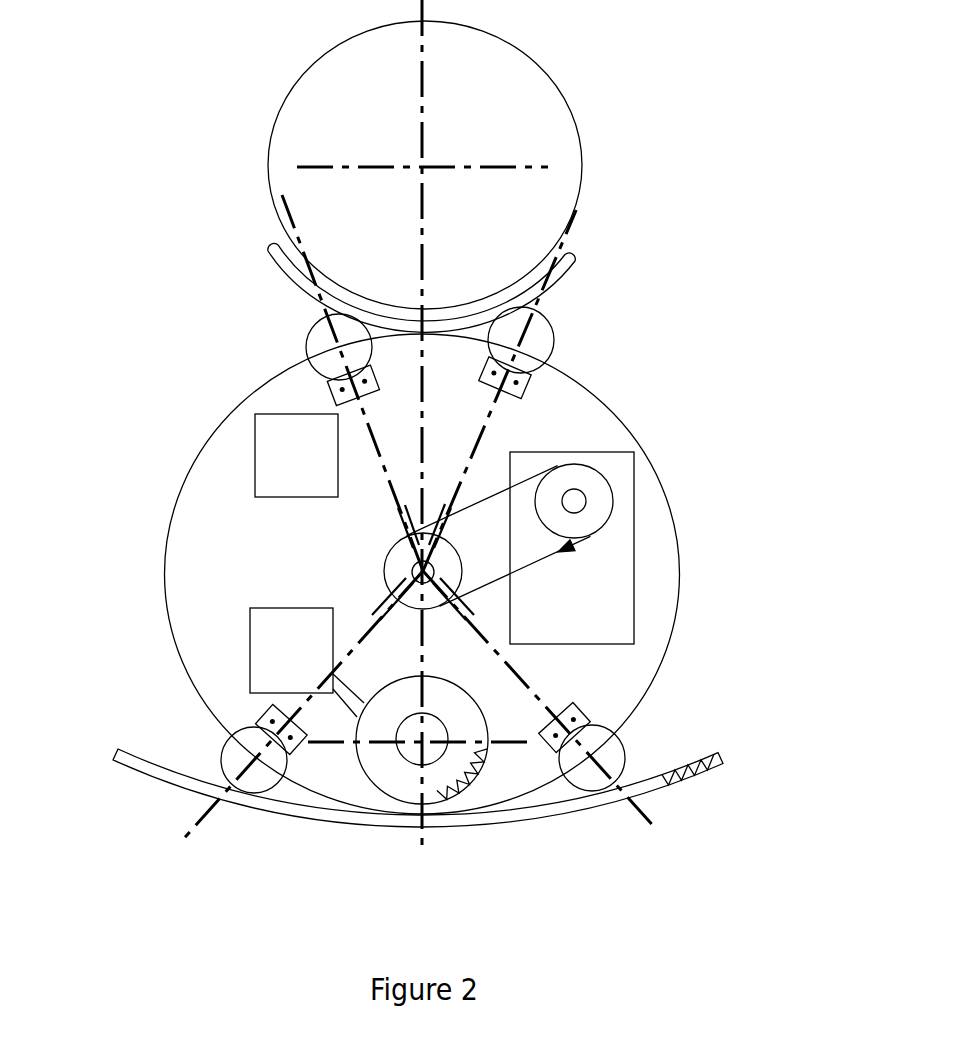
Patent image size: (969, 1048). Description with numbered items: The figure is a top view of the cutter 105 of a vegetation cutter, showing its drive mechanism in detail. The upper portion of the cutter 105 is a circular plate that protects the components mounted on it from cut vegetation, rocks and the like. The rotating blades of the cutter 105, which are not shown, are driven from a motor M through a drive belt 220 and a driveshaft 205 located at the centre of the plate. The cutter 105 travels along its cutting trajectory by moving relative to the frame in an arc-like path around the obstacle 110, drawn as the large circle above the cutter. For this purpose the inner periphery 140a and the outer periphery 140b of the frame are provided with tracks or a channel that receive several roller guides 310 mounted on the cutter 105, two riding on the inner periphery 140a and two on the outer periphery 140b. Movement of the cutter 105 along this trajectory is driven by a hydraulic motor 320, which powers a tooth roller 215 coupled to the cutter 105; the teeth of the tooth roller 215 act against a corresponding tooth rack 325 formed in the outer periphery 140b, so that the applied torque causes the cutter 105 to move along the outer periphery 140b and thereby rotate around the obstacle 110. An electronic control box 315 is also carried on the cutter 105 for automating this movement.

The cutter 105 is at (590, 424).
The obstacle 110 is at (365, 118).
The inner periphery of frame 140a is at (312, 292).
The outer periphery of frame 140b is at (167, 787).
The driveshaft 205 is at (452, 580).
The tooth roller 215 is at (418, 797).
The drive belt 220 is at (566, 553).
The roller guides 310 is at (305, 358).
The electronic control box 315 is at (268, 438).
The hydraulic motor 320 is at (248, 650).
The tooth rack 325 is at (673, 783).